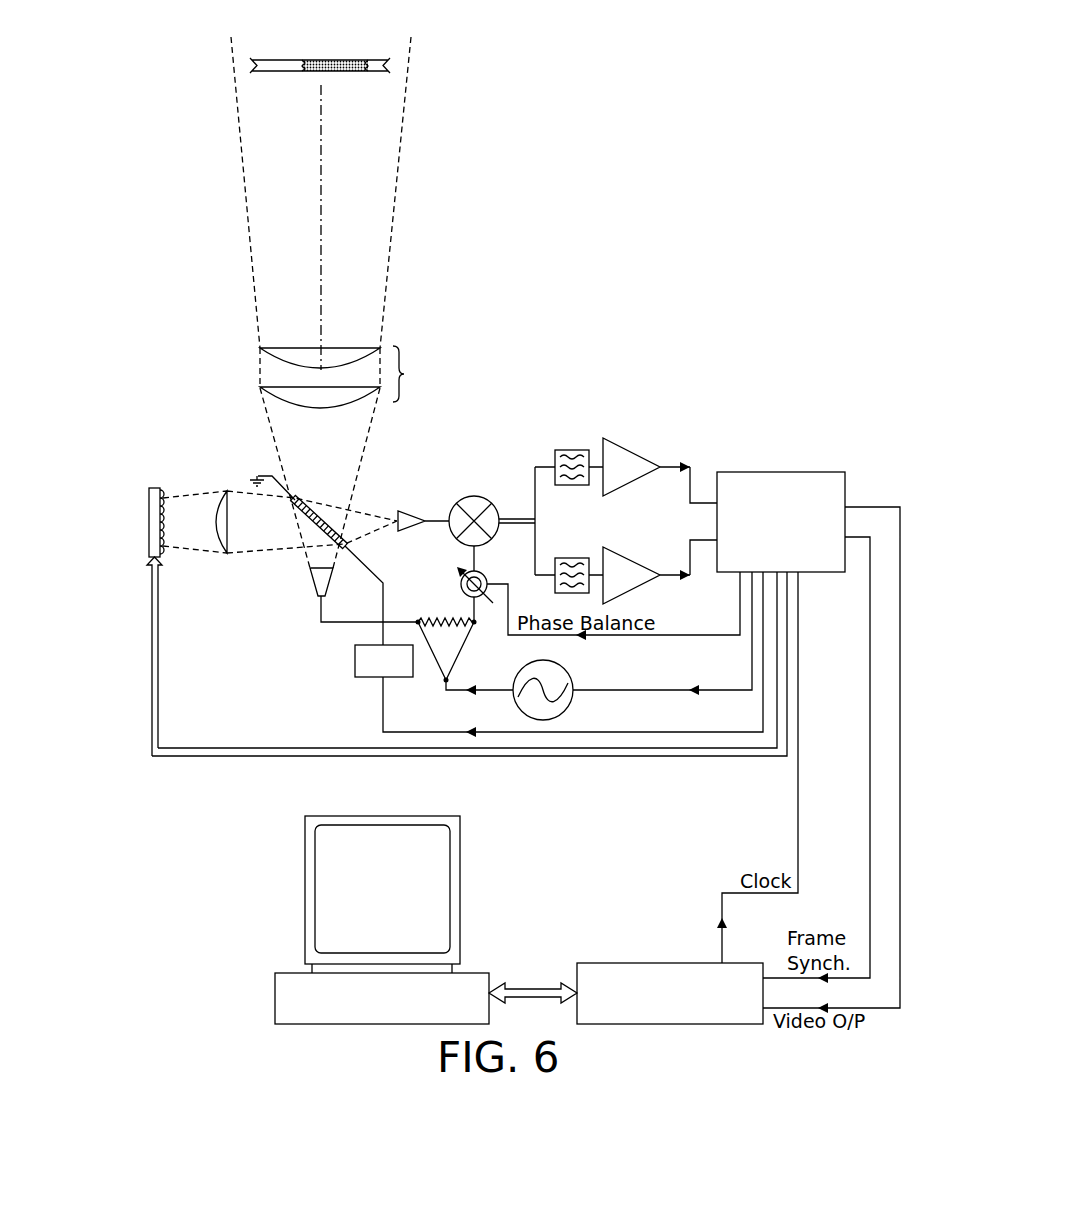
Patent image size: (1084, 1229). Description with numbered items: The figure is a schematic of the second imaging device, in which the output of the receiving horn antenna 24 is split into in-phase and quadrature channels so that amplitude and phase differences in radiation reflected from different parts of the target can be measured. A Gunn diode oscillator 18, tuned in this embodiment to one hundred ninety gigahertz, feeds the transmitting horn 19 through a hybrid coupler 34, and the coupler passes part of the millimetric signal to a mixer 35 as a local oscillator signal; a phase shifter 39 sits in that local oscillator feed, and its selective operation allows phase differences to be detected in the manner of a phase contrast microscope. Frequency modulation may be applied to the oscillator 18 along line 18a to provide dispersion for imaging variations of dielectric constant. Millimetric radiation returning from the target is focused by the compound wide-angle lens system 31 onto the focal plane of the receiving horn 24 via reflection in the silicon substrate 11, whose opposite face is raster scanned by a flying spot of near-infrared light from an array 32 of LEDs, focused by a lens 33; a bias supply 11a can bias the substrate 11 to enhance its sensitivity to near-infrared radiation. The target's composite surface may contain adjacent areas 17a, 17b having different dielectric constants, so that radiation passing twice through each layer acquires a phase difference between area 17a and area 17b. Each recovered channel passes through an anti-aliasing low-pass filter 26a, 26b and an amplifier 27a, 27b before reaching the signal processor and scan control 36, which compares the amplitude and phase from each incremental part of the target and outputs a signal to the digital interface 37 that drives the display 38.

The first area of composite surface 17a is at (276, 66).
The second area of composite surface 17b is at (337, 66).
The compound wide-angle lens system 31 is at (345, 377).
The array of LEDs 32 is at (148, 520).
The lens 33 is at (232, 521).
The silicon substrate 11 is at (319, 524).
The bias supply 11a is at (355, 660).
The transmitting horn 19 is at (310, 582).
The receiving horn antenna 24 is at (410, 509).
The mixer 35 is at (474, 495).
The phase shifter 39 is at (489, 574).
The hybrid coupler 34 is at (430, 615).
The Gunn diode oscillator 18 is at (572, 678).
The frequency modulation line 18a is at (714, 688).
The anti-aliasing low-pass filter 26a is at (571, 460).
The anti-aliasing low-pass filter 26b is at (571, 568).
The amplifier 27a is at (635, 450).
The amplifier 27b is at (635, 560).
The signal processor and scan control 36 is at (782, 471).
The digital interface 37 is at (672, 962).
The display 38 is at (461, 824).